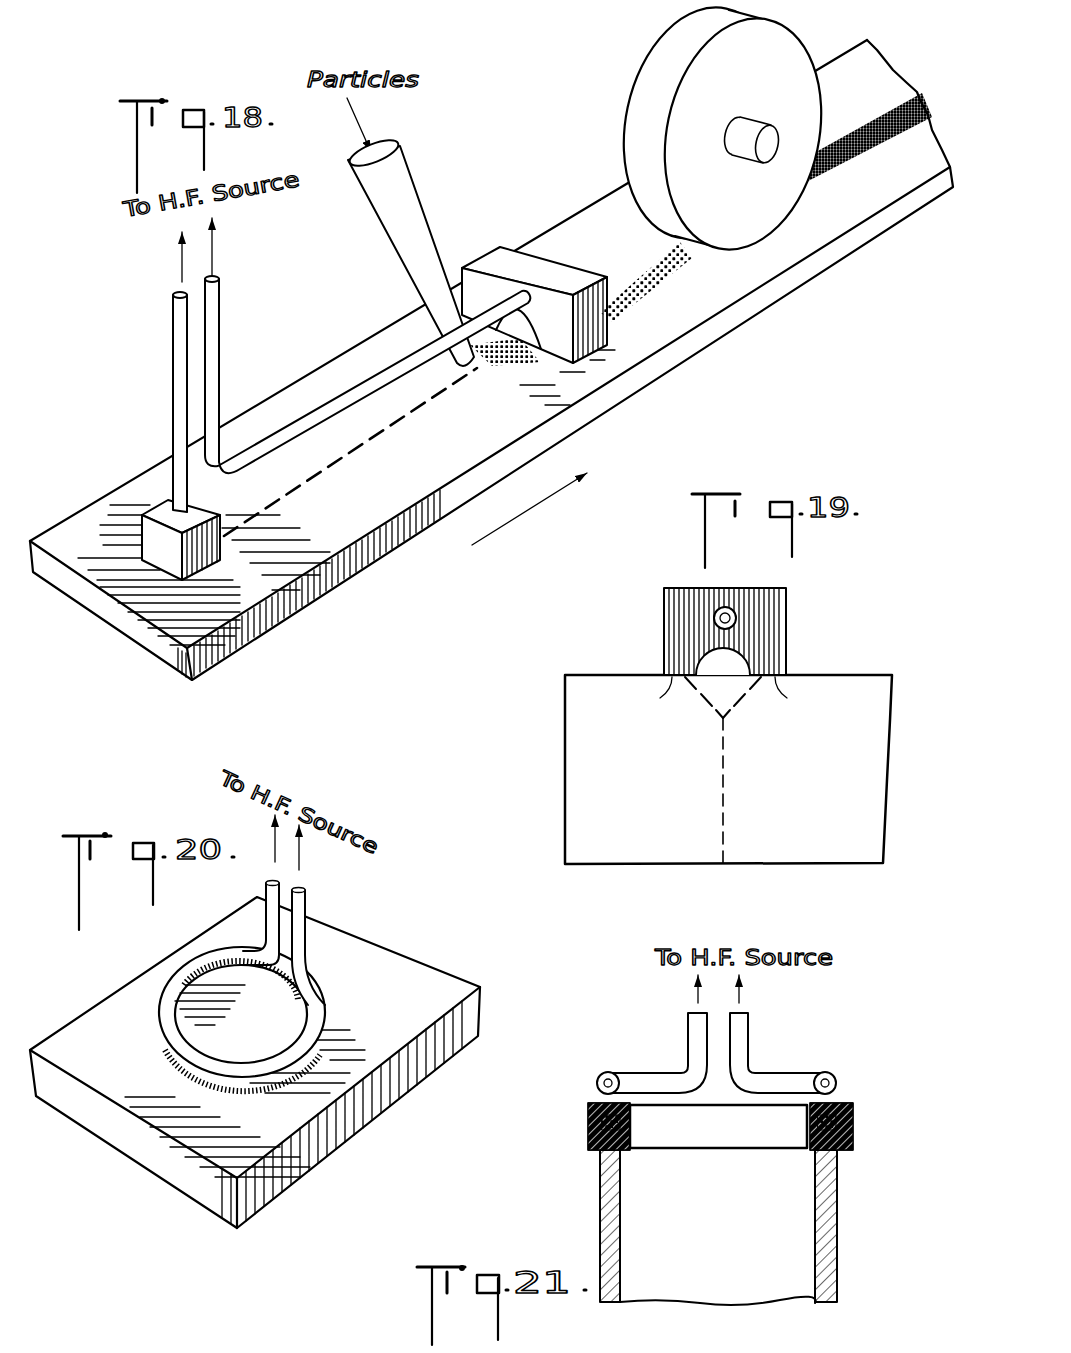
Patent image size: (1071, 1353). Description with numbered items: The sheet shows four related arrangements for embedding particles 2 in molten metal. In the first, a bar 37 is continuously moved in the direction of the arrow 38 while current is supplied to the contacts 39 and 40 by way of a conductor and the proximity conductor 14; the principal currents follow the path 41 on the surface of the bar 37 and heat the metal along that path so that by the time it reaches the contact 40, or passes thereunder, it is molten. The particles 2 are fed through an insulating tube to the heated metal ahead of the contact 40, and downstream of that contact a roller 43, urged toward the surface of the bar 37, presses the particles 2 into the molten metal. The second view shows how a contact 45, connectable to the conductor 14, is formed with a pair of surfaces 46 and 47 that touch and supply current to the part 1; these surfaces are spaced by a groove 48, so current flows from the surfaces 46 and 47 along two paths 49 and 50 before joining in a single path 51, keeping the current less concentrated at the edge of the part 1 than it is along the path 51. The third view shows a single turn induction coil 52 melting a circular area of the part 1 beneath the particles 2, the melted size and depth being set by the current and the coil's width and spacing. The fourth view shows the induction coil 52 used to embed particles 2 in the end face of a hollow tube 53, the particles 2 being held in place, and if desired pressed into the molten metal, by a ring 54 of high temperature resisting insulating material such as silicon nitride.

In FIG. 19, the part 1 is at (565, 738).
In FIG. 20, the part 1 is at (297, 1120).
In FIG. 18, the particles 2 is at (508, 357).
In FIG. 20, the particles 2 is at (215, 1073).
In FIG. 21, the particles 2 is at (843, 1105).
In FIG. 18, the proximity conductor 14 is at (392, 358).
In FIG. 19, the proximity conductor 14 is at (727, 607).
In FIG. 18, the bar 37 is at (308, 594).
In FIG. 18, the arrow 38 is at (522, 513).
In FIG. 18, the contact 39 is at (205, 549).
In FIG. 18, the contact 40 is at (598, 315).
In FIG. 18, the path 41 is at (367, 442).
In FIG. 18, the roller 43 is at (658, 58).
In FIG. 19, the contact 45 is at (664, 599).
In FIG. 19, the surface 46 is at (660, 698).
In FIG. 19, the surface 47 is at (787, 698).
In FIG. 19, the groove 48 is at (745, 656).
In FIG. 19, the path 49 is at (708, 703).
In FIG. 19, the path 50 is at (743, 705).
In FIG. 19, the single path 51 is at (723, 798).
In FIG. 20, the induction coil 52 is at (343, 1018).
In FIG. 21, the induction coil 52 is at (828, 1037).
In FIG. 21, the tube 53 is at (605, 1212).
In FIG. 21, the ring 54 is at (853, 1133).